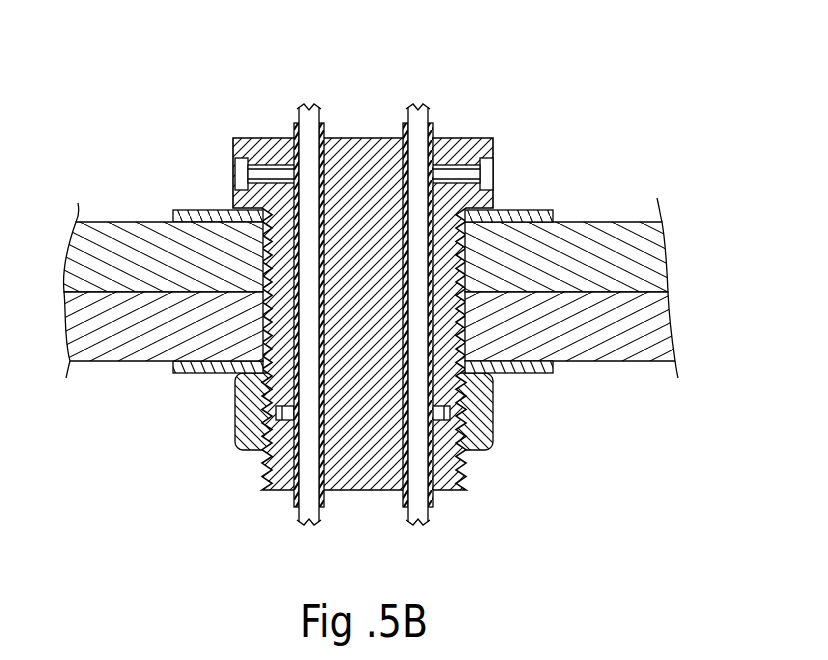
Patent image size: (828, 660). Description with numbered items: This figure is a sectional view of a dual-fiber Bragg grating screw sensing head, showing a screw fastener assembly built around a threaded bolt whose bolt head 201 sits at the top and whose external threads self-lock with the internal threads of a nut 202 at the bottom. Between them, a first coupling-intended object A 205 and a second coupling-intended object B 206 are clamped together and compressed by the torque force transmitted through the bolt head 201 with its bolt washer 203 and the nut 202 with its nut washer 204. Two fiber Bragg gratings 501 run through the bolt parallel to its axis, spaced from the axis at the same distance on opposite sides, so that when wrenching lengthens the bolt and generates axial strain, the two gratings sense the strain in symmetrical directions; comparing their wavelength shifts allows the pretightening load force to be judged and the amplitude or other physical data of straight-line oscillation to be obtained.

The bolt head 201 is at (460, 137).
The nut 202 is at (490, 422).
The bolt washer 203 is at (517, 212).
The nut washer 204 is at (213, 365).
The first coupling-intended object A 205 is at (163, 255).
The second coupling-intended object B 206 is at (130, 340).
The fiber Bragg grating 501 is at (305, 117).